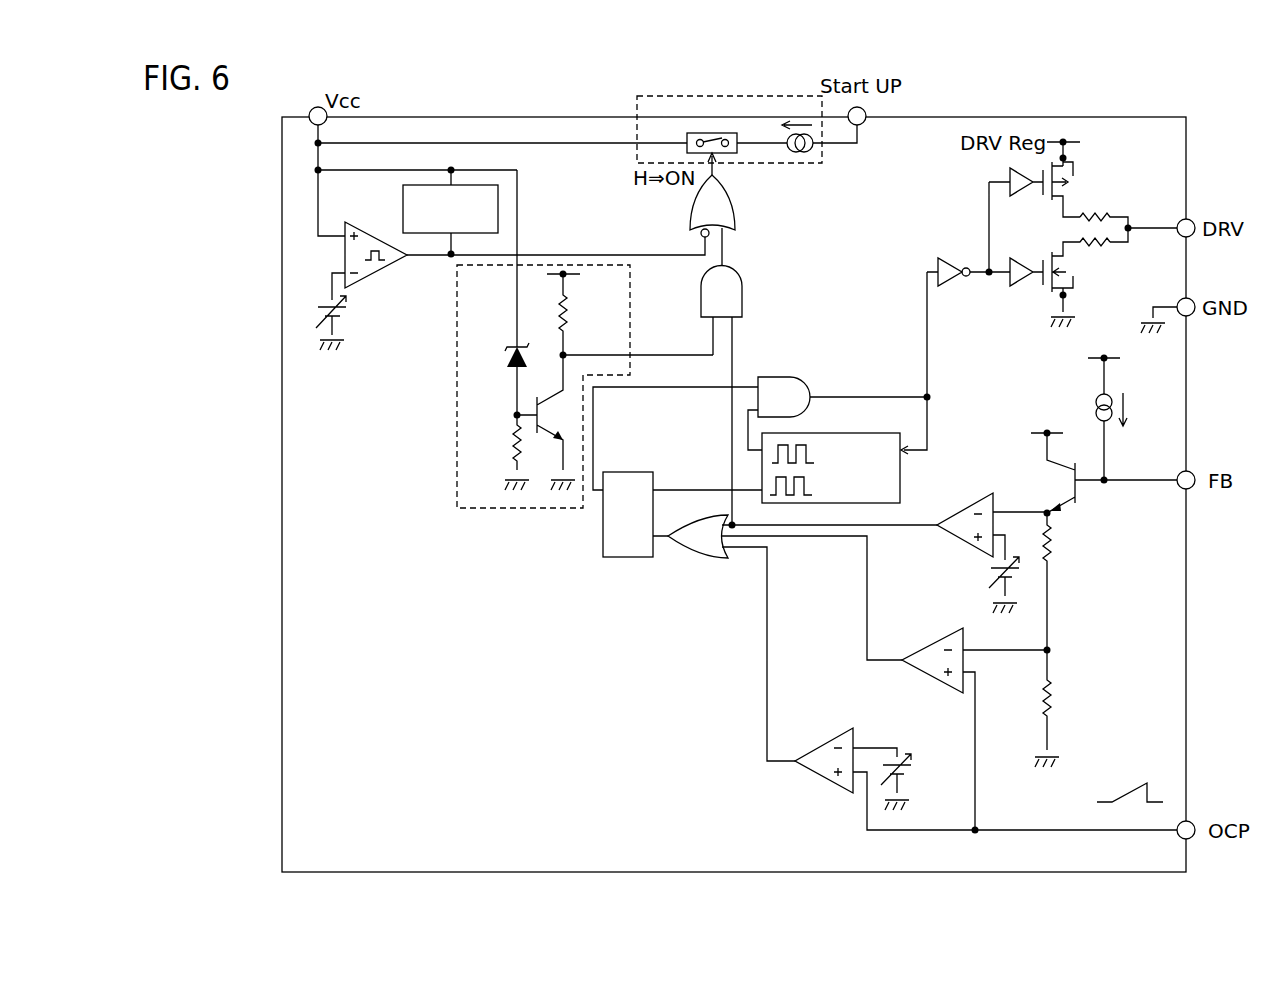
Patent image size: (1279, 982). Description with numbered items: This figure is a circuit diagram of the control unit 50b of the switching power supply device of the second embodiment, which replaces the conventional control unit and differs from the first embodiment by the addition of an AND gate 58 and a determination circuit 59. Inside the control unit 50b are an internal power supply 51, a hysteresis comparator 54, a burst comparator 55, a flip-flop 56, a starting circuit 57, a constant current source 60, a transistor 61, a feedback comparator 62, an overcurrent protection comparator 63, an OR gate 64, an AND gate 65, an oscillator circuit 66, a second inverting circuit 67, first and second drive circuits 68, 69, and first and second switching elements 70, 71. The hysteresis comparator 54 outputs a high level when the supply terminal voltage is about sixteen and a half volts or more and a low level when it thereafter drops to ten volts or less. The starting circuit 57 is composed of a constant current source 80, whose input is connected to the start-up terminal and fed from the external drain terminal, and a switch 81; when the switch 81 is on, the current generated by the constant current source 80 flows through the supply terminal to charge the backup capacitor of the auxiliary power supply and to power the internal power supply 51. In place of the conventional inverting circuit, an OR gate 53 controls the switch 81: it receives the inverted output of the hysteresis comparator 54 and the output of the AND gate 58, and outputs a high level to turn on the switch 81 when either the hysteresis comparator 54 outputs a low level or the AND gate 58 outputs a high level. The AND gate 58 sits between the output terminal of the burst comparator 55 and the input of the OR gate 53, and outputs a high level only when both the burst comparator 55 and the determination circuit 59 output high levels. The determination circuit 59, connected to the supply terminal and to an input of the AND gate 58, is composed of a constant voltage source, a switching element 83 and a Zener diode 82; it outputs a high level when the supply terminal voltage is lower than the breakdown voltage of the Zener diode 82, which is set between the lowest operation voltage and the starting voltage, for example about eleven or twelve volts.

The control unit 50b is at (1007, 116).
The internal power supply 51 is at (403, 208).
The OR gate 53 is at (735, 212).
The hysteresis comparator 54 is at (385, 272).
The BST comparator 55 is at (986, 492).
The flip-flop 56 is at (628, 557).
The starting circuit 57 is at (825, 150).
The AND gate 58 is at (742, 290).
The determination circuit 59 is at (517, 510).
The constant current source 60 is at (1095, 400).
The transistor 61 is at (1082, 490).
The FB comparator 62 is at (943, 627).
The OCP comparator 63 is at (836, 727).
The OR gate 64 is at (705, 558).
The AND gate 65 is at (786, 376).
The oscillator circuit 66 is at (835, 432).
The second inverting circuit 67 is at (953, 285).
The first drive circuit 68 is at (1005, 180).
The second drive circuit 69 is at (1028, 285).
The first switching element 70 is at (1075, 172).
The second switching element 71 is at (1072, 262).
The constant current source 80 is at (800, 155).
The switch 81 is at (712, 133).
The Zener diode 82 is at (495, 358).
The switching element 83 is at (555, 415).